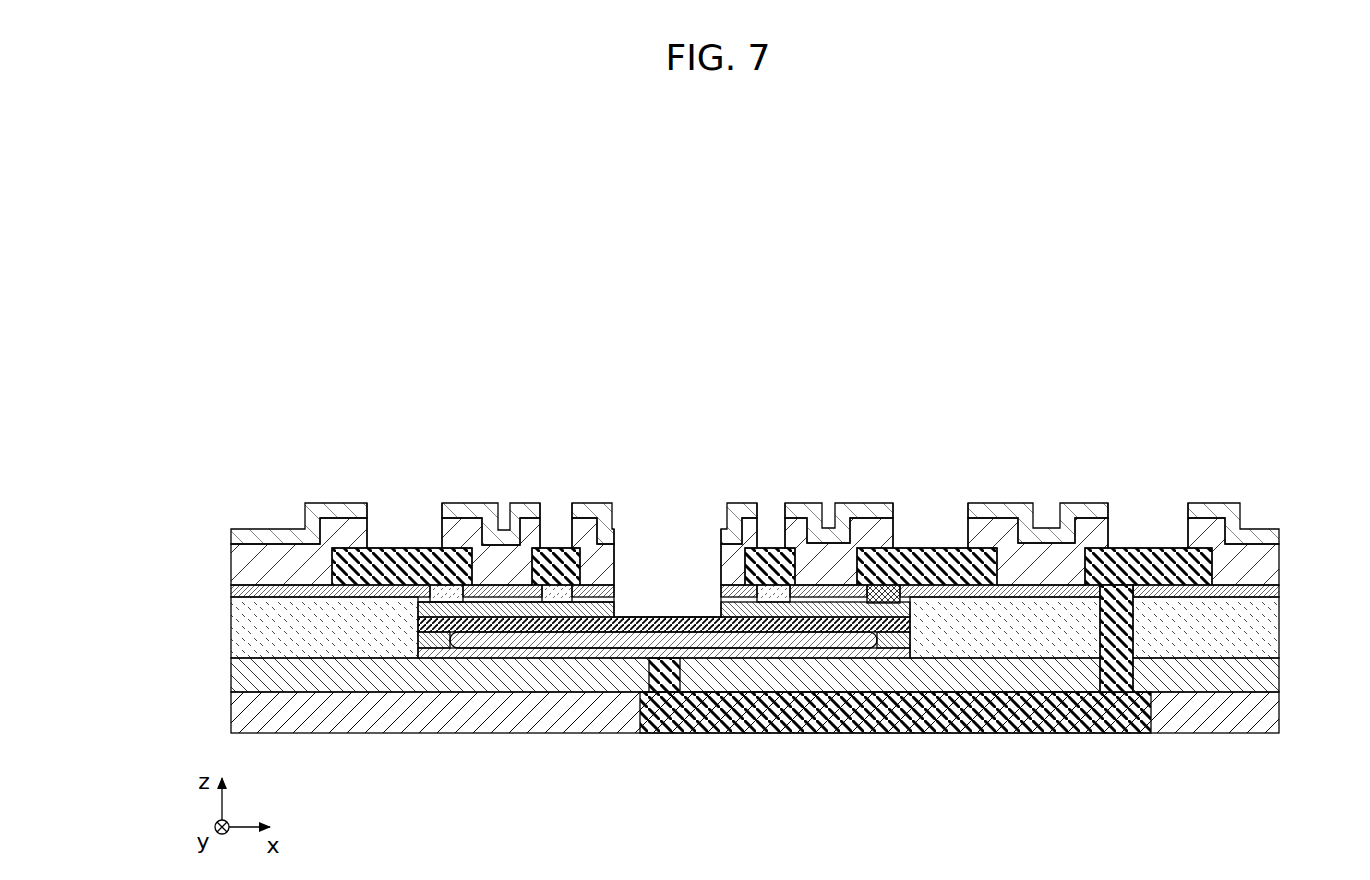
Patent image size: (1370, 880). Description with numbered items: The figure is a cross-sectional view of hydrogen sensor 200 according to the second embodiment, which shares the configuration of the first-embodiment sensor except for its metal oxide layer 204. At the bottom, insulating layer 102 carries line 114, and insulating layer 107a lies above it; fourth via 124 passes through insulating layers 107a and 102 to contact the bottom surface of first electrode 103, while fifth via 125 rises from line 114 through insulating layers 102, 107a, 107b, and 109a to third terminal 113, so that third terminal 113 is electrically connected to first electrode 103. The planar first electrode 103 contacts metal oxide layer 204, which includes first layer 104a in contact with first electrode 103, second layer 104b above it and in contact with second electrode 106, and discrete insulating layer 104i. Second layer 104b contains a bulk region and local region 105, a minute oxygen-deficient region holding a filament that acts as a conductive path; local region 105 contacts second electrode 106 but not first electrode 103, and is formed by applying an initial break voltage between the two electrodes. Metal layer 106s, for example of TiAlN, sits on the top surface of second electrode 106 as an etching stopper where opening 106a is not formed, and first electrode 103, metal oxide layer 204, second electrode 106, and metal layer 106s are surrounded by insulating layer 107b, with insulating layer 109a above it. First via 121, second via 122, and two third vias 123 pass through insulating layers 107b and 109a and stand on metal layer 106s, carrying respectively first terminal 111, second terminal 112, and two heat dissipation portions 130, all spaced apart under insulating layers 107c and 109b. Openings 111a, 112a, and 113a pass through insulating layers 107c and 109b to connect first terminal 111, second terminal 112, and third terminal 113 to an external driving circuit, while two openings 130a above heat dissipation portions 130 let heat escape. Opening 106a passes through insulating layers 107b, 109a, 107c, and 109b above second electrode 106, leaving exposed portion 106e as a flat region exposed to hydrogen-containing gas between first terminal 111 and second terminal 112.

The hydrogen sensor 200 is at (304, 419).
The insulating layer 102 is at (1262, 714).
The first electrode 103 is at (458, 652).
The first layer 104a is at (446, 652).
The second layer 104b is at (448, 640).
The discrete insulating layer 104i is at (418, 634).
The metal oxide layer 204 is at (493, 702).
The local region 105 is at (663, 638).
The second electrode 106 is at (422, 618).
The metal layer 106s is at (425, 603).
The opening 106a is at (700, 557).
The exposed portion 106e is at (638, 609).
The insulating layer 107a is at (1262, 678).
The insulating layer 107b is at (1262, 626).
The insulating layer 107c is at (1262, 564).
The insulating layer 109a is at (1279, 591).
The insulating layer 109b is at (1262, 538).
The first terminal 111 is at (421, 588).
The opening 111a is at (399, 527).
The second terminal 112 is at (948, 587).
The opening 112a is at (927, 537).
The third terminal 113 is at (1158, 550).
The opening 113a is at (1135, 537).
The line 114 is at (1052, 718).
The first via 121 is at (450, 595).
The second via 122 is at (879, 600).
The third via 123 is at (565, 598).
The fourth via 124 is at (652, 700).
The fifth via 125 is at (1107, 585).
The heat dissipation portion 130 is at (560, 588).
The opening 130a is at (552, 525).